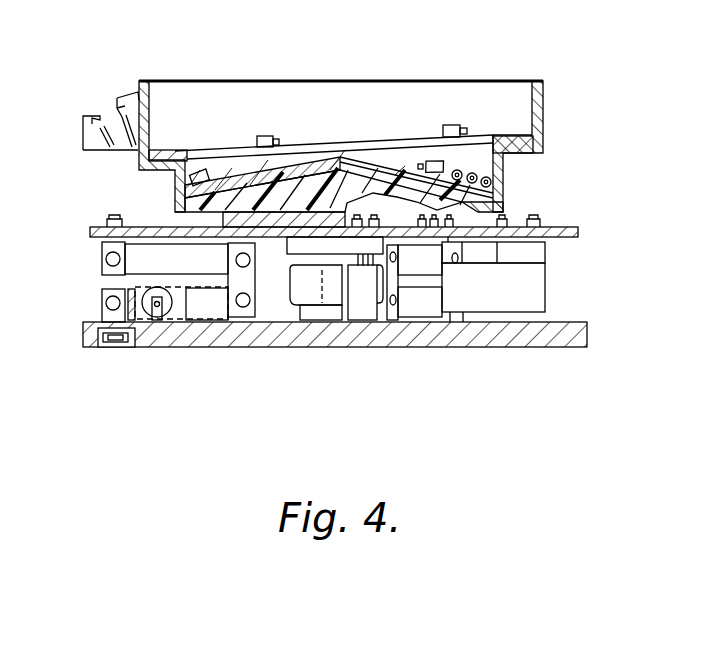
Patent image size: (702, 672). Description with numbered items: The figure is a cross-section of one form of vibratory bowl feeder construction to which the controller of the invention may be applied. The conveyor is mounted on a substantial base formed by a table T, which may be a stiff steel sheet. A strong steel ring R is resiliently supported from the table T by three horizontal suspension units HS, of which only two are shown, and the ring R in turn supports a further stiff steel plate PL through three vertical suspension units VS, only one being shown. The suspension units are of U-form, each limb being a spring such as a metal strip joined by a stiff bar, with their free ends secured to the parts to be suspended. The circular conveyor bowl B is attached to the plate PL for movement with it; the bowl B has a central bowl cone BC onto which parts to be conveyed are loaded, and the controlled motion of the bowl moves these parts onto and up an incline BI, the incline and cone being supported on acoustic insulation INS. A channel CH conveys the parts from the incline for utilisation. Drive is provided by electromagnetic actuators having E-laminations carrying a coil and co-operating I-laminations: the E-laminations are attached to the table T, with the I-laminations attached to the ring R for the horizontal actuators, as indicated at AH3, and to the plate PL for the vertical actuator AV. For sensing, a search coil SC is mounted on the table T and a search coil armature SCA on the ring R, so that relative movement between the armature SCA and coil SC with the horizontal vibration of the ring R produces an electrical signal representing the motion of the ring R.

The conveyor bowl B is at (148, 112).
The channel CH is at (83, 113).
The incline BI is at (167, 155).
The acoustic insulation INS is at (512, 133).
The plate PL is at (313, 210).
The vertical suspension unit VS is at (393, 200).
The bowl cone BC is at (403, 165).
The ring R is at (566, 224).
The table T is at (572, 322).
The horizontal suspension unit HS is at (196, 300).
The search coil SC is at (150, 292).
The search coil armature SCA is at (153, 310).
The vertical actuator AV is at (298, 287).
The horizontal actuator AH3 is at (522, 285).